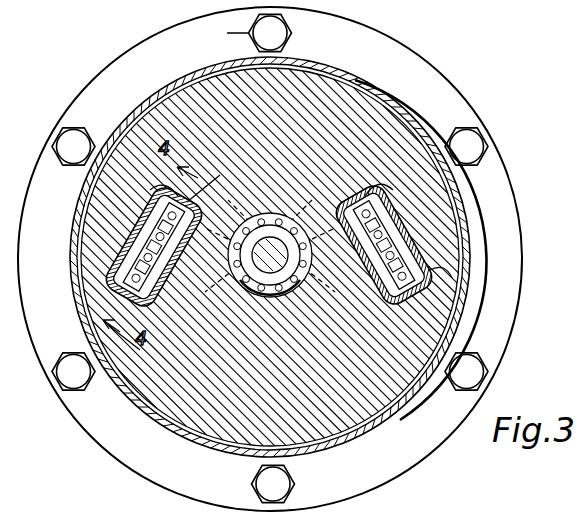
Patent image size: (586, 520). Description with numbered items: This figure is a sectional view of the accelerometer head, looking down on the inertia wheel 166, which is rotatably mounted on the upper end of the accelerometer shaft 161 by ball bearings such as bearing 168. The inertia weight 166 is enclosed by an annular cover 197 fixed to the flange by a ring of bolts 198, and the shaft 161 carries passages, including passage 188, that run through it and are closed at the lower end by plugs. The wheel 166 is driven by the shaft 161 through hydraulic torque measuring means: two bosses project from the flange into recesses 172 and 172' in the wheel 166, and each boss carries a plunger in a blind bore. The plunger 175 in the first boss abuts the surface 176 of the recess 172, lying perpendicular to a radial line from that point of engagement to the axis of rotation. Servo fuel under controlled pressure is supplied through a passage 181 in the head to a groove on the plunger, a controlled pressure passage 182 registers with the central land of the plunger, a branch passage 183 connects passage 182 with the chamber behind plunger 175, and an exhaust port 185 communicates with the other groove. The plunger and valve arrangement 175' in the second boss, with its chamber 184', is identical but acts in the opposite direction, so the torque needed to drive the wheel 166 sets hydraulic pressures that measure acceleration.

The inertia wheel 166 is at (356, 72).
The annular cover 197 is at (175, 432).
The bolts 198 is at (248, 33).
The accelerometer shaft 161 is at (262, 296).
The passage 188 is at (282, 299).
The ball bearing 168 is at (304, 290).
The passage 181 is at (238, 198).
The recess 172 is at (138, 246).
The branch passage 183 is at (118, 240).
The plunger 175 is at (149, 180).
The exhaust port 185 is at (172, 296).
The controlled pressure passage 182 is at (190, 272).
The surface 176 is at (210, 202).
The recess 172' is at (410, 244).
The chamber 184' is at (473, 276).
The plunger and valve arrangement 175' is at (391, 171).